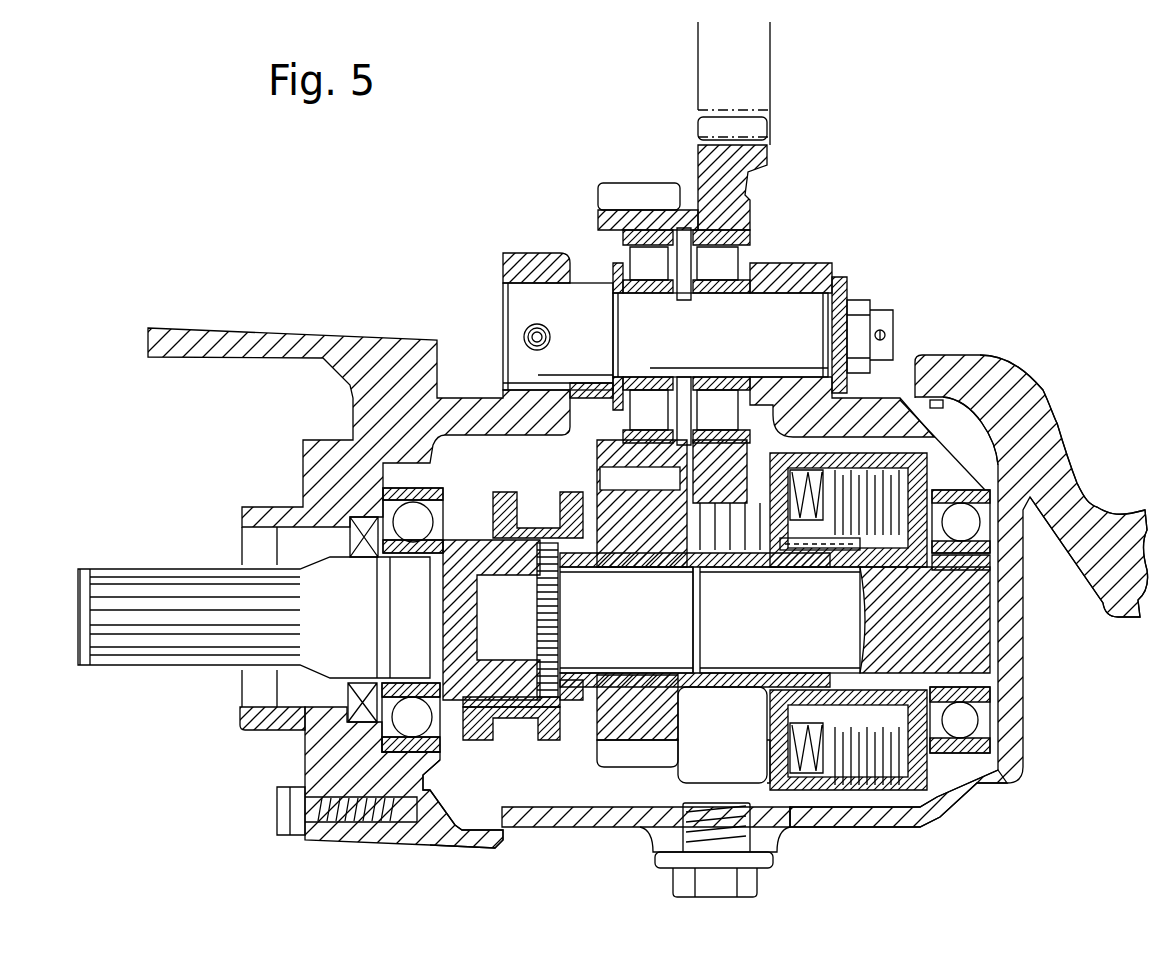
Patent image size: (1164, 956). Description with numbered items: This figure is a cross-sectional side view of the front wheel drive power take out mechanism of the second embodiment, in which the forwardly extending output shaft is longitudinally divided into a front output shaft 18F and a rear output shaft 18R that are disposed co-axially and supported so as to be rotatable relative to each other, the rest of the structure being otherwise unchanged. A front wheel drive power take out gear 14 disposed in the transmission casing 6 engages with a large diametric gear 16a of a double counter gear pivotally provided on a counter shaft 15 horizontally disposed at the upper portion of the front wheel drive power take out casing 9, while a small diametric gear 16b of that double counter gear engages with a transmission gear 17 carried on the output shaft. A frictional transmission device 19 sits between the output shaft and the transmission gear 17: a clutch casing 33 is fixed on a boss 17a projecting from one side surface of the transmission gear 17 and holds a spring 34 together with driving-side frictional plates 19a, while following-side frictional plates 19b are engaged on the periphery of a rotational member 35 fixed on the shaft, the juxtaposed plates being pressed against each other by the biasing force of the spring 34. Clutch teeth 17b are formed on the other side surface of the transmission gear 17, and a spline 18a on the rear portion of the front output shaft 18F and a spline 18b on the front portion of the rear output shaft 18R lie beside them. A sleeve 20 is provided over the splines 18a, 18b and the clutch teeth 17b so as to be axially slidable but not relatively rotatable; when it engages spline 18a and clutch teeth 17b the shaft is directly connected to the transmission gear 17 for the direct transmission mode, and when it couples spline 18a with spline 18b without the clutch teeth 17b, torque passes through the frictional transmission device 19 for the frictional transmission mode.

The transmission casing 6 is at (1118, 617).
The front wheel drive power take out casing 9 is at (1023, 703).
The front wheel drive power take out gear 14 is at (775, 52).
The counter shaft 15 is at (717, 352).
The large diametric gear 16a is at (765, 152).
The small diametric gear 16b is at (632, 185).
The transmission gear 17 is at (628, 762).
The boss 17a is at (797, 567).
The clutch teeth 17b is at (583, 700).
The spline 18a is at (463, 537).
The spline 18b is at (558, 585).
The front output shaft 18F is at (130, 655).
The rear output shaft 18R is at (983, 627).
The frictional transmission device 19 is at (863, 794).
The driving-side frictional plates 19a is at (860, 730).
The following-side frictional plates 19b is at (960, 793).
The sleeve 20 is at (537, 775).
The clutch casing 33 is at (767, 723).
The spring 34 is at (770, 753).
The rotational member 35 is at (860, 648).